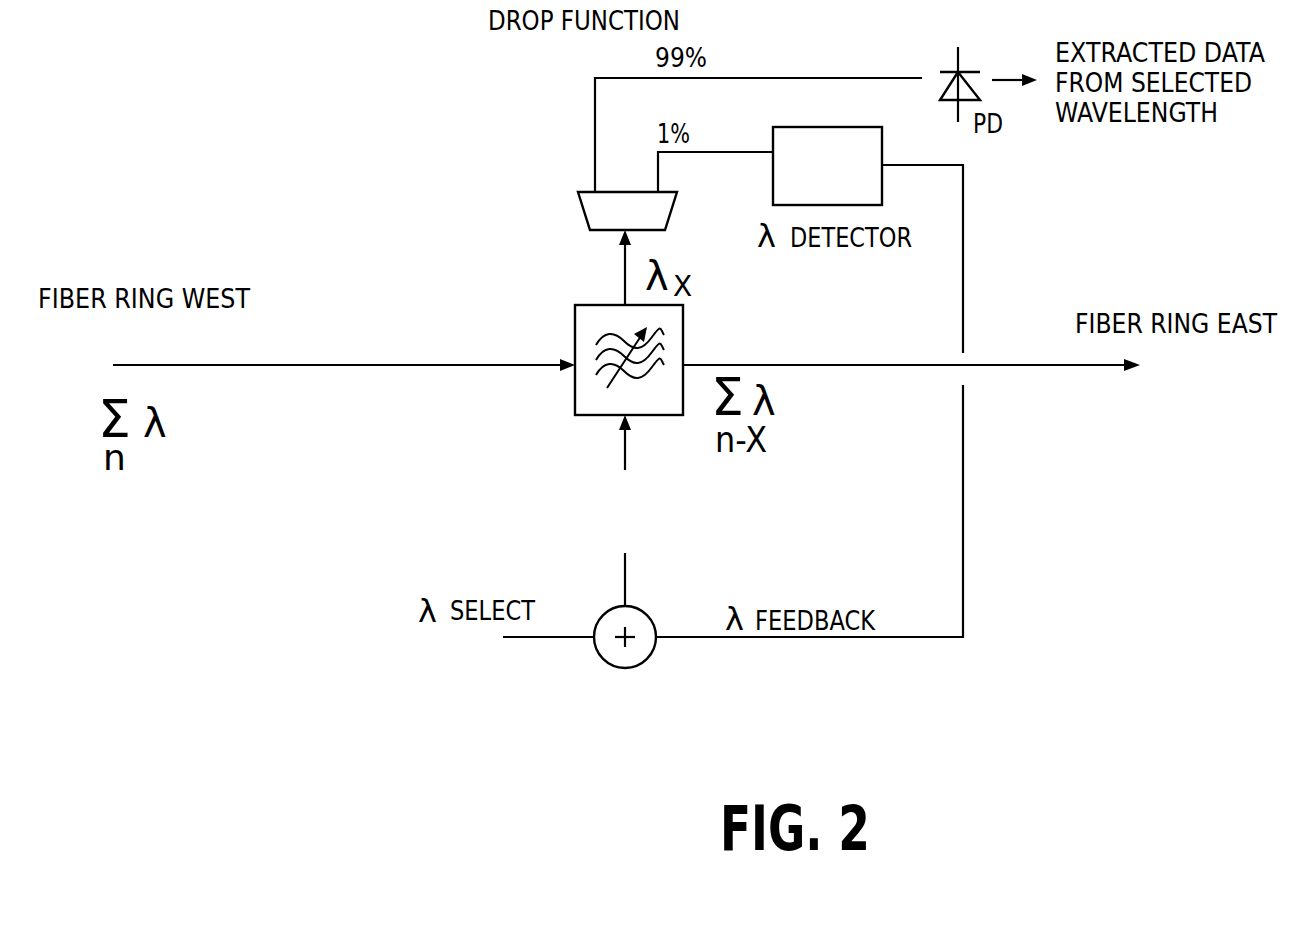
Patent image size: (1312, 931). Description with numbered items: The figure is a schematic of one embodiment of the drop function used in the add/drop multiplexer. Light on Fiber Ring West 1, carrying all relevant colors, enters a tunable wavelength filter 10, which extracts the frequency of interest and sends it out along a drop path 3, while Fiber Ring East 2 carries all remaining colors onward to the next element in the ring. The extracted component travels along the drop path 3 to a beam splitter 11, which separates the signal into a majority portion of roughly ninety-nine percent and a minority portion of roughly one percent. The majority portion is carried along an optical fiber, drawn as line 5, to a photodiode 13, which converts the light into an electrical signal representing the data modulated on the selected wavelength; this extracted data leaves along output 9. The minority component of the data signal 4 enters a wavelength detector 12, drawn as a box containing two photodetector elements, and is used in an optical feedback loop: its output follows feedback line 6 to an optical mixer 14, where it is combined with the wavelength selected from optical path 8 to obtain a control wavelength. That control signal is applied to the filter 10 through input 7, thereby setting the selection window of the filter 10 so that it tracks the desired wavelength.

The Fiber Ring West 1 is at (344, 351).
The Fiber Ring East 2 is at (911, 352).
The drop path 3 is at (611, 267).
The minority component of the data signal 4 is at (715, 155).
The 99% output 5 is at (758, 117).
The feedback line 6 is at (821, 401).
The filter control input 7 is at (627, 458).
The optical path 8 is at (548, 658).
The extracted data output 9 is at (1014, 65).
The tunable wavelength filter 10 is at (575, 323).
The beam splitter 11 is at (580, 210).
The wavelength detector 12 is at (814, 151).
The photodiode 13 is at (952, 68).
The optical mixer 14 is at (625, 610).